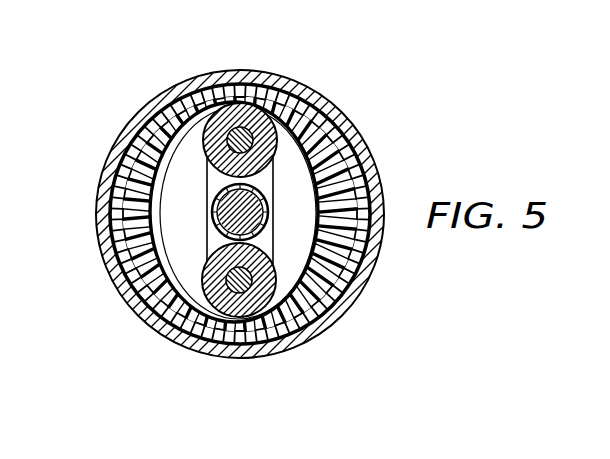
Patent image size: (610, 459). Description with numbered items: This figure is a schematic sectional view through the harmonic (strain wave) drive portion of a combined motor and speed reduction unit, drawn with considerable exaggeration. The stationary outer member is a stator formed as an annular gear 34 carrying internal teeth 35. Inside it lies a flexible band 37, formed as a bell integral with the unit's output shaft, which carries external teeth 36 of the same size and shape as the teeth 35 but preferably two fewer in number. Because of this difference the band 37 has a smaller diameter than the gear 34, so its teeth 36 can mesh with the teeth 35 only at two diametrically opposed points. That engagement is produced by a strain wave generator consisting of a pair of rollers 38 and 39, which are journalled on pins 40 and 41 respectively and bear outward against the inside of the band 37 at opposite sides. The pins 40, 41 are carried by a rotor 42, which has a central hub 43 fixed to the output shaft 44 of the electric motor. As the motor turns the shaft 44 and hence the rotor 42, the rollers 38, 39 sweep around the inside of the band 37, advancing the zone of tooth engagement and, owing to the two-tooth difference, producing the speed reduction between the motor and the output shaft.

The annular gear 34 is at (155, 102).
The teeth 35 is at (125, 158).
The teeth 36 is at (130, 206).
The flexible band 37 is at (190, 110).
The roller 38 is at (253, 308).
The roller 39 is at (252, 108).
The pin 40 is at (233, 292).
The pin 41 is at (229, 128).
The rotor 42 is at (273, 250).
The hub 43 is at (268, 203).
The output shaft 44 is at (217, 219).